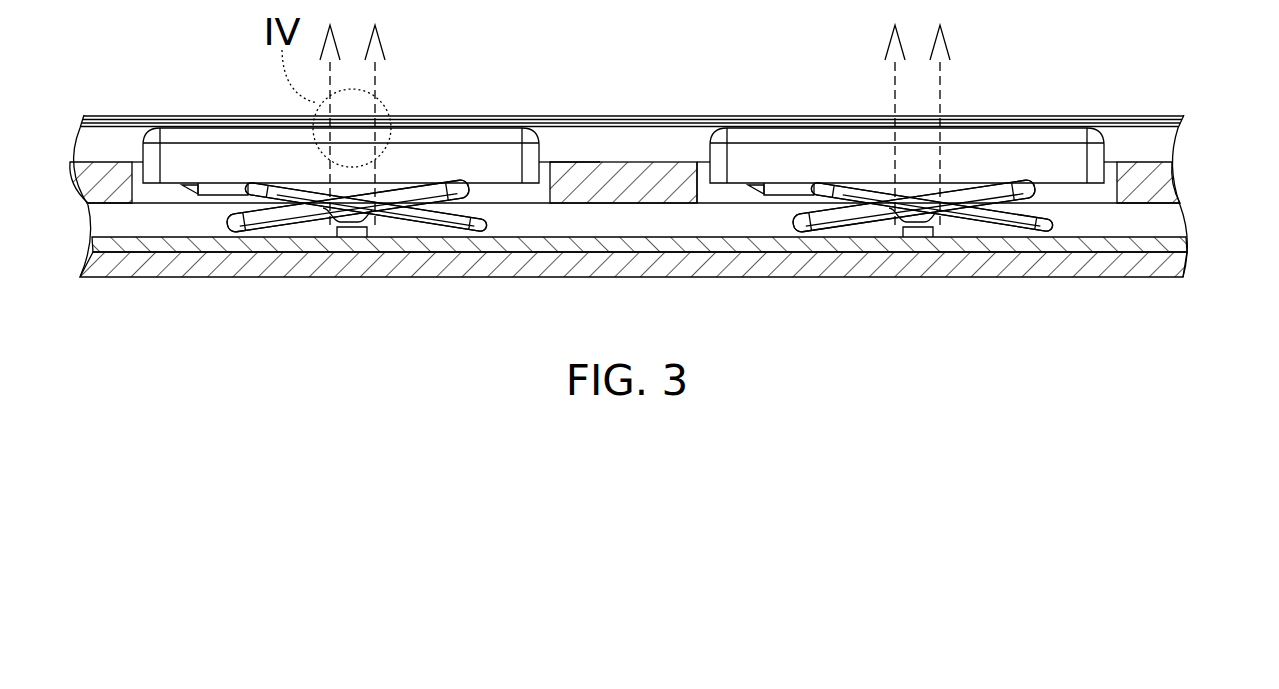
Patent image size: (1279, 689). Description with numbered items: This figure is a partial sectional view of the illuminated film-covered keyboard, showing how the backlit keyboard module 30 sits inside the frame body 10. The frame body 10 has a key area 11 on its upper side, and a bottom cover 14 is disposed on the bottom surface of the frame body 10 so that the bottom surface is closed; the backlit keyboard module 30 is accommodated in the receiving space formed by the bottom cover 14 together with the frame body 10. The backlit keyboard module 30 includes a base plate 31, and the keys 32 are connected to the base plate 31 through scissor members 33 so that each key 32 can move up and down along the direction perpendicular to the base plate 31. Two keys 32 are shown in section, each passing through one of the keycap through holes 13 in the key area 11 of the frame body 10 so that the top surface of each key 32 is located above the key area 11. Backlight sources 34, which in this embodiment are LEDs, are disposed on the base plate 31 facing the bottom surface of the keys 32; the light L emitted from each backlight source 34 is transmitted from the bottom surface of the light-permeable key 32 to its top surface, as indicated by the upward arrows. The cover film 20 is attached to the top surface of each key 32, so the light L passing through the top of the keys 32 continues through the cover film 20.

The frame body 10 is at (615, 170).
The key area 11 is at (571, 159).
The keycap through holes 13 is at (702, 173).
The bottom cover 14 is at (523, 262).
The cover film 20 is at (207, 117).
The backlit keyboard module 30 is at (725, 262).
The base plate 31 is at (1040, 243).
The keys 32 is at (990, 155).
The scissor members 33 is at (998, 220).
The backlight sources 34 is at (352, 240).
The light L is at (378, 73).